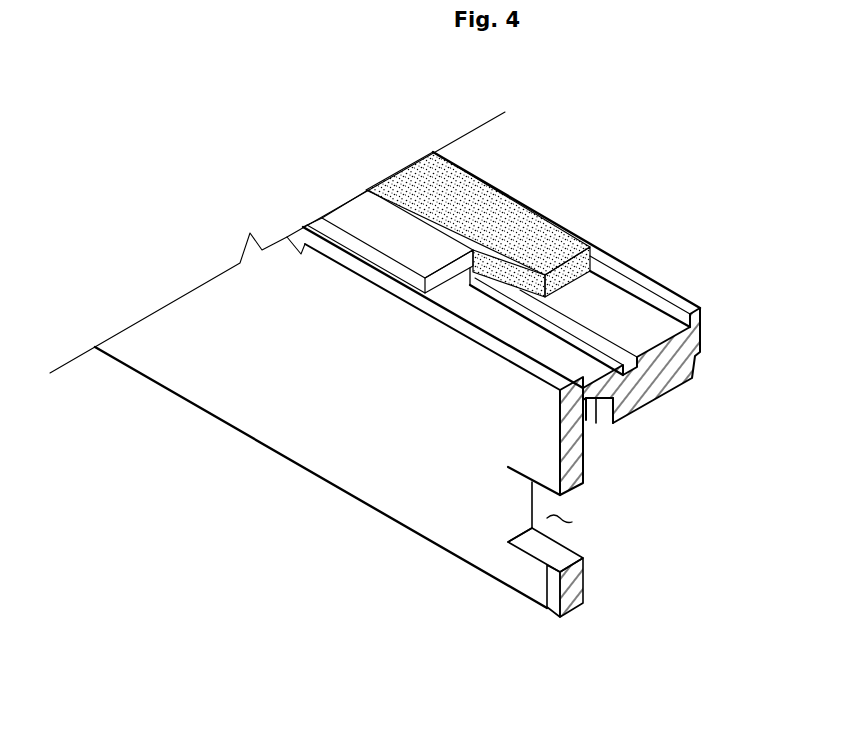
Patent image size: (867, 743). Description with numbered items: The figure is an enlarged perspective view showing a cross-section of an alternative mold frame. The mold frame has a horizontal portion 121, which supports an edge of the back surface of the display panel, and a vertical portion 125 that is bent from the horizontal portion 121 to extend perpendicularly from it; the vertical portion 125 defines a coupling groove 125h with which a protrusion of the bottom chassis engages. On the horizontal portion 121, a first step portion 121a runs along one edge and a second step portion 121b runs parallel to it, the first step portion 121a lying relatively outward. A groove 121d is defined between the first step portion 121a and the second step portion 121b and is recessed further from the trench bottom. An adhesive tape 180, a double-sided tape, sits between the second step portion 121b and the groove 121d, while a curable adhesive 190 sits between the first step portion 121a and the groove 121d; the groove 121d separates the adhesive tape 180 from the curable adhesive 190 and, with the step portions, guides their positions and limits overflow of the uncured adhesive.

The horizontal portion 121 is at (686, 352).
The first step portion 121a is at (593, 407).
The second step portion 121b is at (681, 306).
The groove 121d is at (590, 336).
The vertical portion 125 is at (437, 512).
The coupling groove 125h is at (548, 522).
The adhesive tape 180 is at (523, 230).
The curable adhesive 190 is at (362, 213).